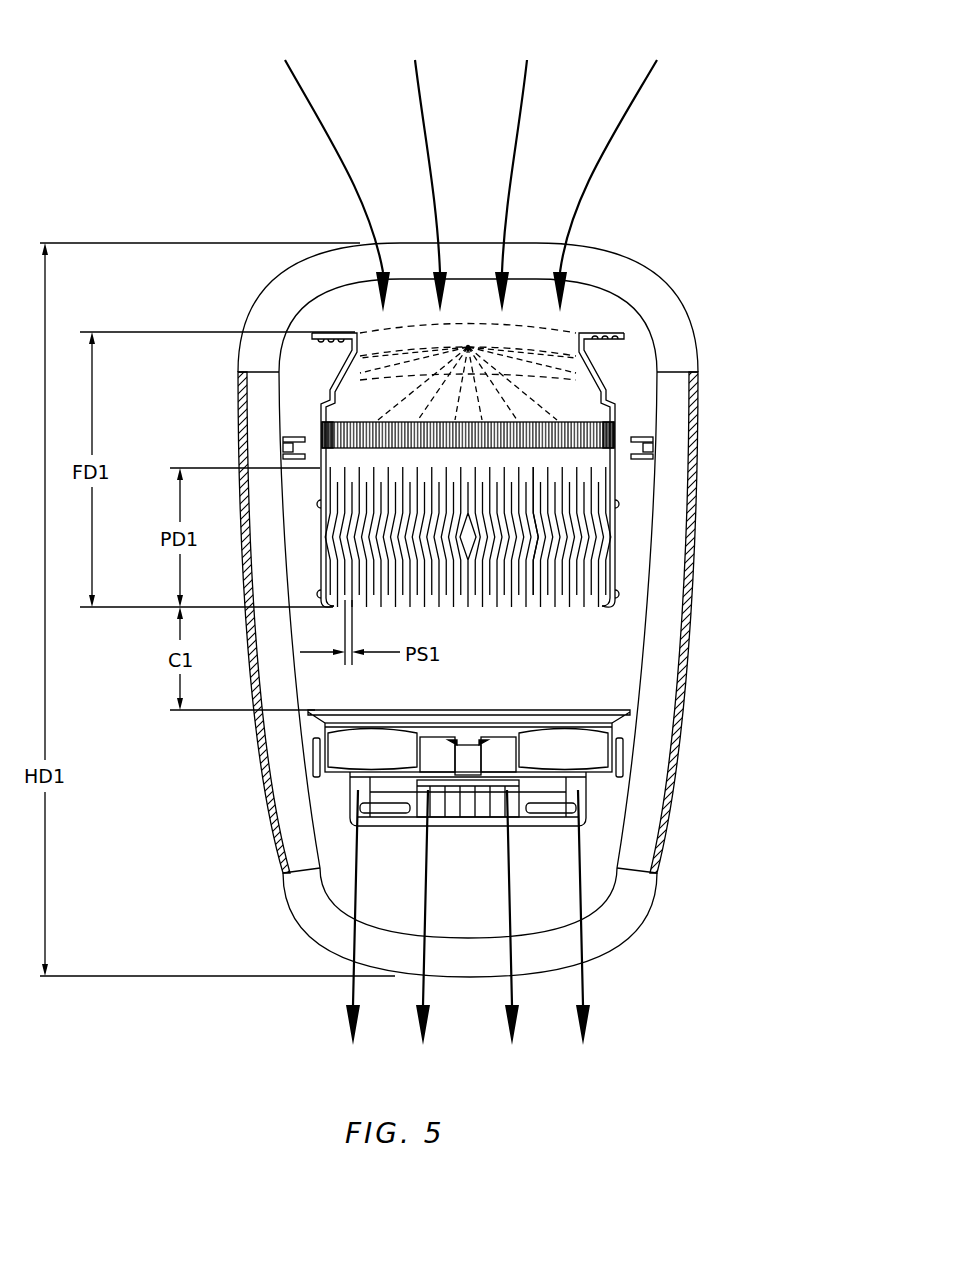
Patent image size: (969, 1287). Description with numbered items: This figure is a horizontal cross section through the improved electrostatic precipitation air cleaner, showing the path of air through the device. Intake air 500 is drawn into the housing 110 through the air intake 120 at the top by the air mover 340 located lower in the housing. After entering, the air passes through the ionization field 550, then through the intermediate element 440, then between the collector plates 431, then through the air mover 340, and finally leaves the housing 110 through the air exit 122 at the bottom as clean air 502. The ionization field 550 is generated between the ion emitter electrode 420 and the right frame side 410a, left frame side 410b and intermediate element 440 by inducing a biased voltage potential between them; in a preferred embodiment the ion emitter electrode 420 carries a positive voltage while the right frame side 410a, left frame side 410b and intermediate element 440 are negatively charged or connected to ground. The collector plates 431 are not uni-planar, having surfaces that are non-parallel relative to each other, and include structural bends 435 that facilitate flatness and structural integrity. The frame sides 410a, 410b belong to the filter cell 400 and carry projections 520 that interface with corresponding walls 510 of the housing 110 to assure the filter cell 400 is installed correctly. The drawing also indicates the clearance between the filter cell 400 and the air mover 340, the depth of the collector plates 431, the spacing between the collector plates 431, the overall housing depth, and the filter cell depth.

The housing 110 is at (698, 495).
The air intake 120 is at (590, 262).
The air exit 122 is at (605, 918).
The air mover 340 is at (615, 775).
The filter cell 400 is at (135, 123).
The right frame side 410a is at (607, 333).
The left frame side 410b is at (340, 373).
The ion emitter electrode 420 is at (468, 347).
The collector plates 431 is at (512, 607).
The structural bends 435 is at (612, 548).
The intermediate element 440 is at (577, 423).
The intake air 500 is at (360, 180).
The clean air 502 is at (340, 1008).
The walls 510 is at (643, 432).
The projections 520 is at (652, 447).
The ionization field 550 is at (373, 328).